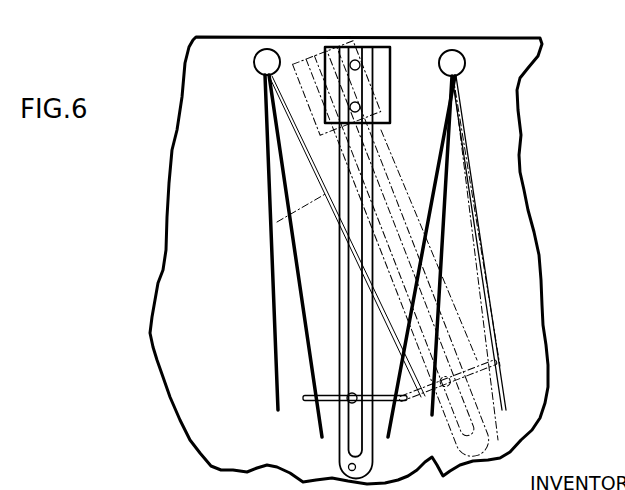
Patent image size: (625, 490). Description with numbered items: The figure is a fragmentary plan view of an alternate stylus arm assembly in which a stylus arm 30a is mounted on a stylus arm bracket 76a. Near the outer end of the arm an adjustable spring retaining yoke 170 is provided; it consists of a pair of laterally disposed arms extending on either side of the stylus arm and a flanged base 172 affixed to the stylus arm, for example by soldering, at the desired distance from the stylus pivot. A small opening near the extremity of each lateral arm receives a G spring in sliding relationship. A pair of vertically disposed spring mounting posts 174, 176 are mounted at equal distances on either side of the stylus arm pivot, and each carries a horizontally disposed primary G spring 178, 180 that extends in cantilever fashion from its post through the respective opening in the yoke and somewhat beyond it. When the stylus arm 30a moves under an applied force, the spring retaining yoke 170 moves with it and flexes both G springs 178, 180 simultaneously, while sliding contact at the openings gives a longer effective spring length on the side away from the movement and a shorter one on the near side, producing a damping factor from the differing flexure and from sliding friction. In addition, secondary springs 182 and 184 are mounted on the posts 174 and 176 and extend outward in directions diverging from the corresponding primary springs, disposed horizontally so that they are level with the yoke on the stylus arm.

The spring mounting post 174 is at (268, 58).
The spring mounting post 176 is at (453, 62).
The stylus arm bracket 76a is at (378, 44).
The stylus arm 30a is at (355, 178).
The secondary spring 182 is at (268, 185).
The primary G spring 178 is at (289, 208).
The primary G spring 180 is at (433, 193).
The secondary spring 184 is at (440, 265).
The spring retaining yoke 170 is at (383, 408).
The flanged base 172 is at (350, 403).